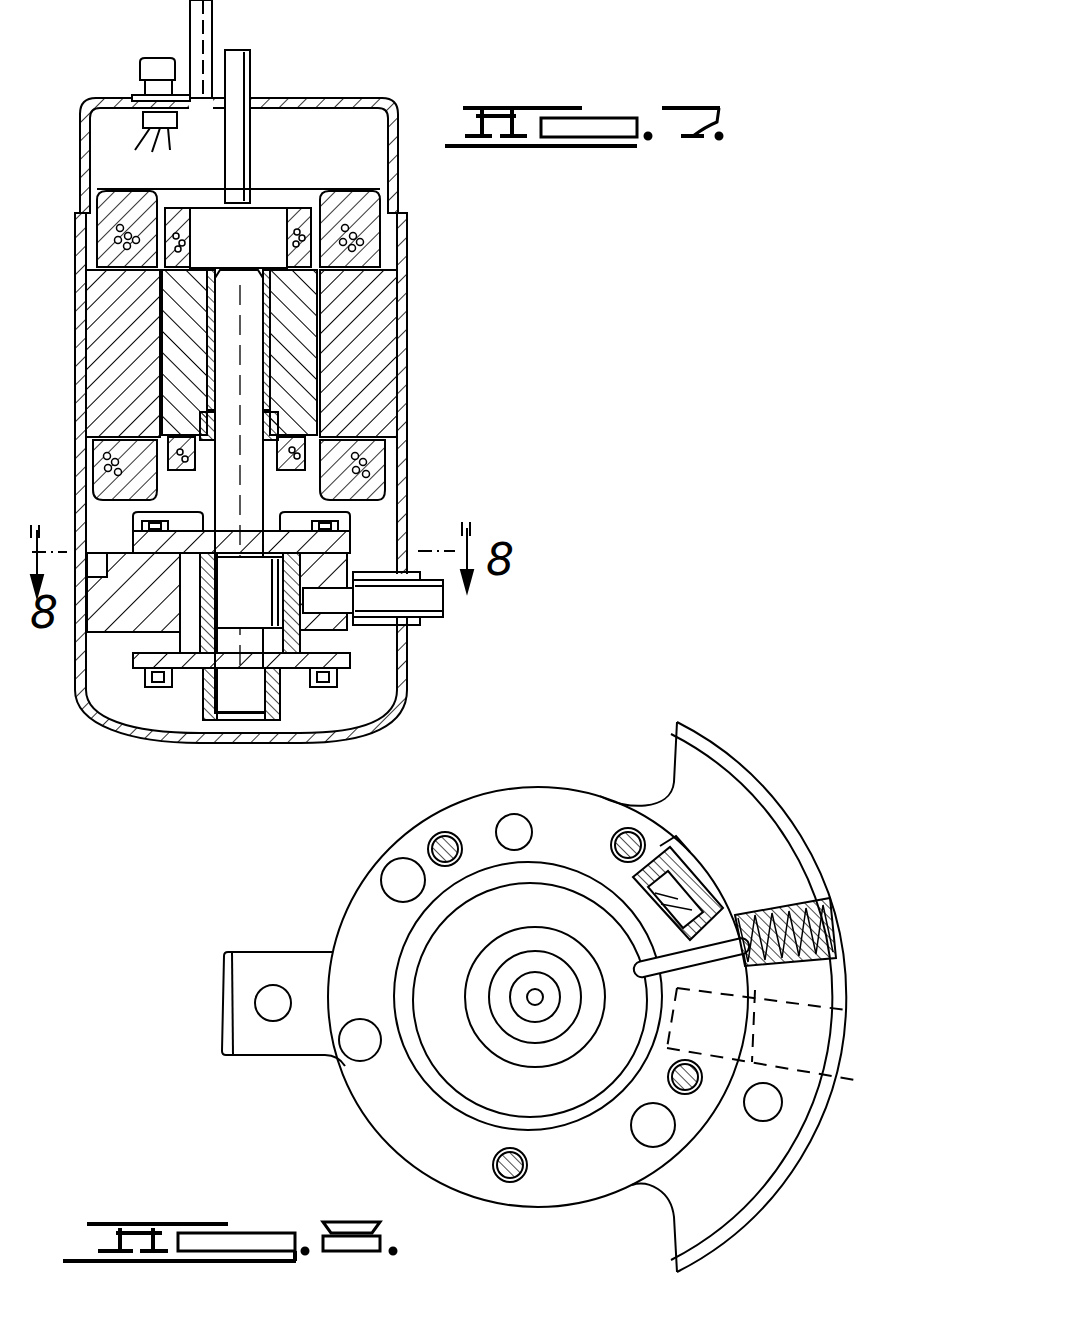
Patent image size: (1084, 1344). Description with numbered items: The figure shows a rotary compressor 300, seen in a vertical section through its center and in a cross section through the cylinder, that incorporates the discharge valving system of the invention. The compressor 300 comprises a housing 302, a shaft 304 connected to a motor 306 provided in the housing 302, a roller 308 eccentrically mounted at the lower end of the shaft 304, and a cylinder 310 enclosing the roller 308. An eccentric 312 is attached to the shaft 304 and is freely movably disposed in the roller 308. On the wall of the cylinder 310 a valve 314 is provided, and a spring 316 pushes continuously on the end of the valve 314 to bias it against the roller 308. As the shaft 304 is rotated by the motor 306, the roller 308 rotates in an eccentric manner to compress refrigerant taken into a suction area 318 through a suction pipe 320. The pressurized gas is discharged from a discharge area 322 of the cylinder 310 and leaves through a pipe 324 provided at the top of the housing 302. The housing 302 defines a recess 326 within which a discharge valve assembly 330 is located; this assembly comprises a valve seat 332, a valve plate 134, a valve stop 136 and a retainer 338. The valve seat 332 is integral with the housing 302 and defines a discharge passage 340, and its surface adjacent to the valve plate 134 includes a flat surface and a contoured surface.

In FIG. 7, the compressor 300 is at (434, 72).
In FIG. 7, the housing 302 is at (396, 346).
In FIG. 7, the shaft 304 is at (248, 323).
In FIG. 7, the motor 306 is at (376, 386).
In FIG. 7, the roller 308 is at (247, 624).
In FIG. 8, the roller 308 is at (430, 934).
In FIG. 7, the cylinder 310 is at (188, 591).
In FIG. 8, the cylinder 310 is at (470, 825).
In FIG. 8, the eccentric 312 is at (478, 967).
In FIG. 8, the valve 314 is at (661, 981).
In FIG. 8, the spring 316 is at (838, 978).
In FIG. 8, the suction area 318 is at (628, 1068).
In FIG. 7, the suction pipe 320 is at (434, 609).
In FIG. 8, the suction pipe 320 is at (843, 1060).
In FIG. 8, the discharge area 322 is at (575, 878).
In FIG. 7, the pipe 324 is at (251, 70).
In FIG. 8, the recess 326 is at (694, 873).
In FIG. 8, the discharge valve assembly 330 is at (677, 890).
In FIG. 8, the valve seat 332 is at (578, 912).
In FIG. 8, the retainer 338 is at (688, 846).
In FIG. 8, the discharge passage 340 is at (545, 1000).
In FIG. 8, the valve plate 134 is at (655, 872).
In FIG. 8, the valve stop 136 is at (690, 898).